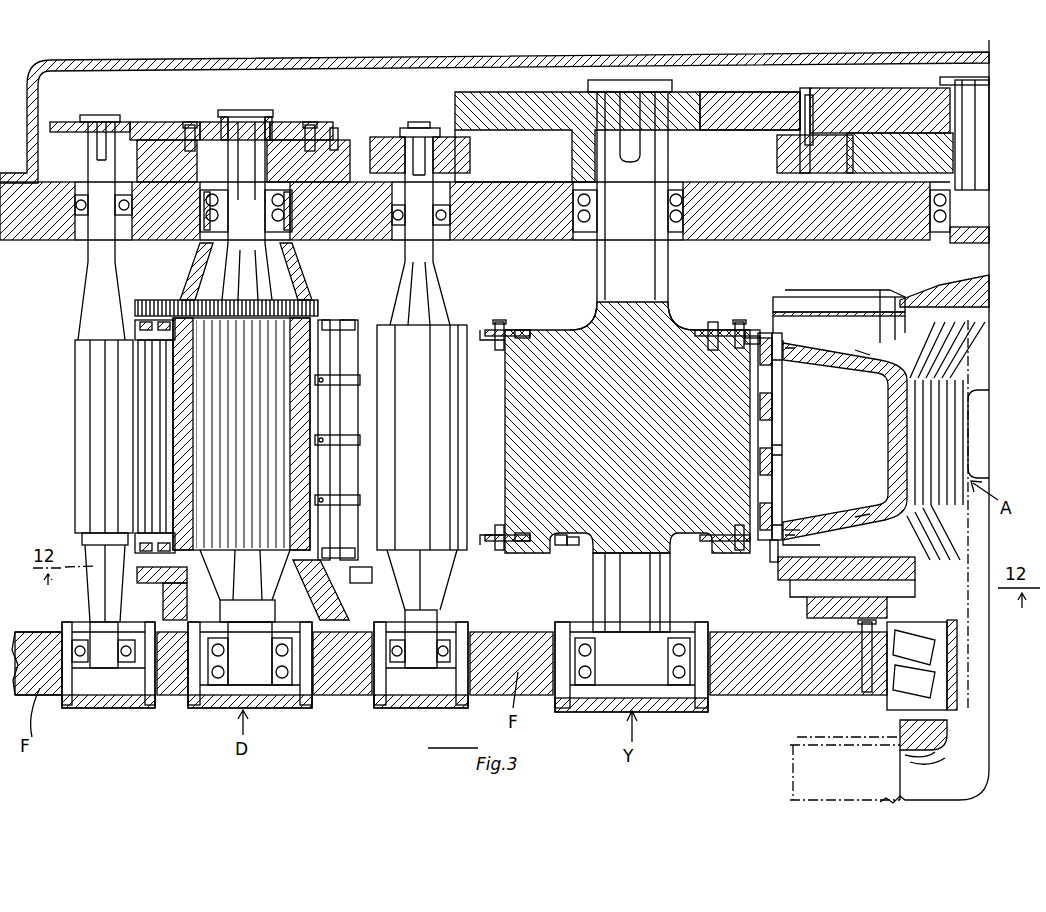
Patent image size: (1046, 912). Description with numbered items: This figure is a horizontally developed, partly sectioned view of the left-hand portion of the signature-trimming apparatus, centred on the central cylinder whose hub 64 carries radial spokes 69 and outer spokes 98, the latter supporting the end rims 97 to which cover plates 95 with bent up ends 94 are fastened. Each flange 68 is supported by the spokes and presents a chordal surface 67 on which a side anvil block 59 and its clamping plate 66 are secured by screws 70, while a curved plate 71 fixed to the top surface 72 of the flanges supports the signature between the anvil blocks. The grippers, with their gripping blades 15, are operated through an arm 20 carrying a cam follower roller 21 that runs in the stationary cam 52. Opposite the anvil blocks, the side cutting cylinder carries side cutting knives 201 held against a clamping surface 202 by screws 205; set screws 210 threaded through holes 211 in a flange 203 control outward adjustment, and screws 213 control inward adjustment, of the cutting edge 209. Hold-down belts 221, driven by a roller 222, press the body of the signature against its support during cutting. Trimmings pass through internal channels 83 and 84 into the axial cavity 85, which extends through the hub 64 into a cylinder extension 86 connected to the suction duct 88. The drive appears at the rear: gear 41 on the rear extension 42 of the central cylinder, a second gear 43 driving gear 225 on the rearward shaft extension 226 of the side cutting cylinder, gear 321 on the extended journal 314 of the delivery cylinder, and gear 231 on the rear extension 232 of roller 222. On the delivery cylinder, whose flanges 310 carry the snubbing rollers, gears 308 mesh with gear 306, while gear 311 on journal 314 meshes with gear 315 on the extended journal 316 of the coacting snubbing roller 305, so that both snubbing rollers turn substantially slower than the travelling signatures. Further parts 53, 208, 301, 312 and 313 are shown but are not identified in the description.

The gripping blade 15 is at (773, 433).
The arm 20 is at (312, 565).
The cam follower roller 21 is at (376, 583).
The gear 41 is at (798, 150).
The rear extension 42 is at (973, 145).
The second gear 43 is at (901, 97).
The stationary cam 52 is at (812, 607).
The bolt 53 is at (863, 686).
The side anvil block 59 is at (791, 540).
The central cylinder hub 64 is at (896, 437).
The clamping plate 66 is at (821, 345).
The chordal surface 67 is at (858, 346).
The flange 68 is at (796, 355).
The spoke 69 is at (858, 352).
The screws 70 is at (801, 340).
The curved plate 71 is at (778, 450).
The top surface 72 is at (790, 362).
The internal channel 83 is at (976, 425).
The internal channel 84 is at (905, 340).
The axial cavity 85 is at (975, 642).
The cylinder extension 86 is at (950, 660).
The suction duct 88 is at (800, 735).
The bent up ends 94 is at (772, 546).
The cover plates 95 is at (777, 333).
The end rims 97 is at (791, 333).
The outer spokes 98 is at (886, 343).
The side cutting knives 201 is at (500, 325).
The clamping surface 202 is at (718, 340).
The flange 203 is at (560, 546).
The screws 205 is at (521, 546).
The clamp 208 is at (752, 338).
The cutting edge 209 is at (492, 330).
The set screws 210 is at (716, 330).
The holes 211 is at (740, 322).
The screws 213 is at (567, 548).
The hold-down belts 221 is at (773, 410).
The roller 222 is at (420, 711).
The gear 225 is at (506, 100).
The rearward shaft extension 226 is at (668, 150).
The gear 231 is at (392, 138).
The rear extension 232 is at (403, 133).
The bracket 301 is at (150, 581).
The snubbing roller 305 is at (80, 395).
The gear 306 is at (318, 308).
The gears 308 is at (171, 300).
The flanges 310 is at (140, 326).
The gear 311 is at (213, 121).
The shaft 312 is at (243, 110).
The plate 313 is at (307, 121).
The extended journal 314 is at (284, 118).
The gear 315 is at (176, 122).
The extended journal 316 is at (103, 167).
The gear 321 is at (336, 136).